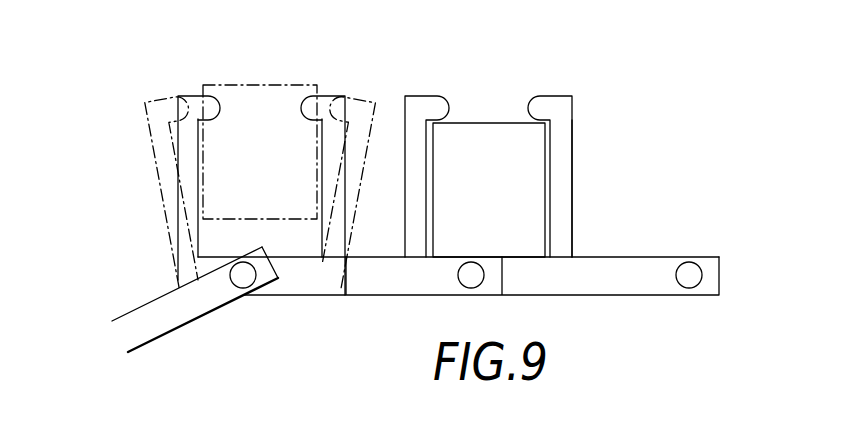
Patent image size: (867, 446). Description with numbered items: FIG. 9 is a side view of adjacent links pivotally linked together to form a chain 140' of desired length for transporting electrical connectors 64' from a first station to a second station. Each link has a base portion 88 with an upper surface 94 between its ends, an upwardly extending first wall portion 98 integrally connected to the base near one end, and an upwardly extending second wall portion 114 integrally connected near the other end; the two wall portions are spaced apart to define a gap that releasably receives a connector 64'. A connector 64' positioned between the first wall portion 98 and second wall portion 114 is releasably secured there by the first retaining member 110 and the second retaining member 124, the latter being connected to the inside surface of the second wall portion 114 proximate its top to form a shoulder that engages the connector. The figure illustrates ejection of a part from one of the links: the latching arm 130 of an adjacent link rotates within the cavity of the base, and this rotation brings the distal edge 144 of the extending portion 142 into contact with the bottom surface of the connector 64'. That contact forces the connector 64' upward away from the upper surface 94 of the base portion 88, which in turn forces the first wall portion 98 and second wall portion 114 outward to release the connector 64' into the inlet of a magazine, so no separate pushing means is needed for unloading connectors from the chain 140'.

The electrical connector 64' is at (371, 140).
The base portion 88 is at (192, 272).
The extending portion 142 is at (243, 252).
The second wall portion 114 is at (413, 193).
The second retaining member 124 is at (418, 102).
The first retaining member 110 is at (555, 103).
The first wall portion 98 is at (557, 172).
The upper surface 94 is at (293, 257).
The latching arm 130 is at (135, 320).
The distal edge 144 is at (260, 247).
The chain 140' is at (481, 334).